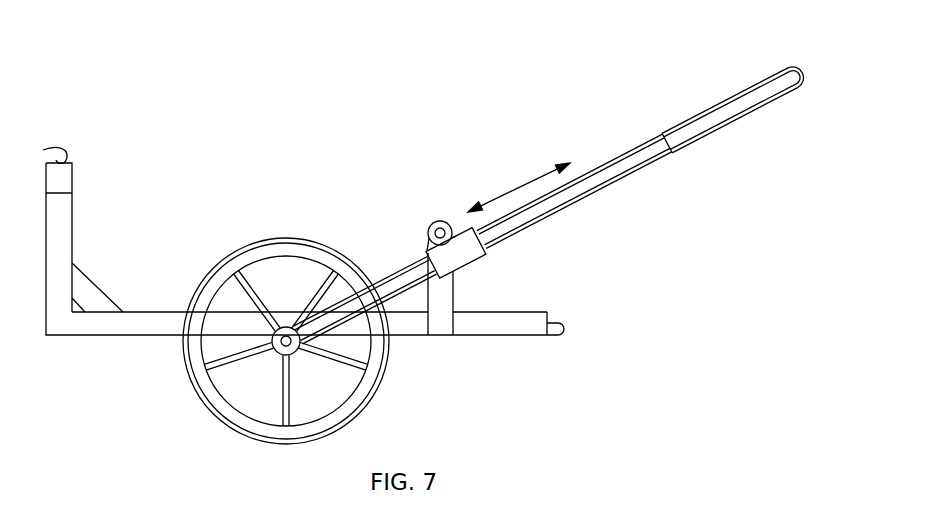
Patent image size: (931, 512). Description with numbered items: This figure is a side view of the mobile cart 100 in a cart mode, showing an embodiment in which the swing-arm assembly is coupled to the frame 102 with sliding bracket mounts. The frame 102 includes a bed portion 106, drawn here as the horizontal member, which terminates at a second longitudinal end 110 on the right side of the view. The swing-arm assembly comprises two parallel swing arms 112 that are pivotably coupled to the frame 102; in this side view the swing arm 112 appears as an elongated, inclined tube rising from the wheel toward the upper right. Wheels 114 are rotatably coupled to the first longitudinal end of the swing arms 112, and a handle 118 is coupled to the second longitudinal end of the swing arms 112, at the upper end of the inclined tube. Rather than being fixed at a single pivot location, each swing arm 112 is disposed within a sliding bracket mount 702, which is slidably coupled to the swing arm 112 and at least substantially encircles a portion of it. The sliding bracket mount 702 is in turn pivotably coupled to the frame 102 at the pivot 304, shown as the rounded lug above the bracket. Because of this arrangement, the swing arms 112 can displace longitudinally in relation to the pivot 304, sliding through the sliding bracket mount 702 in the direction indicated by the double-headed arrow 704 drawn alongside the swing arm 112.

The mobile cart 100 is at (158, 104).
The frame 102 is at (160, 311).
The bed portion 106 is at (110, 338).
The second longitudinal end 110 is at (557, 316).
The swing arms 112 is at (617, 155).
The wheels 114 is at (233, 256).
The handle 118 is at (800, 70).
The pivot 304 is at (431, 223).
The sliding bracket mount 702 is at (476, 262).
The arrow 704 is at (523, 185).